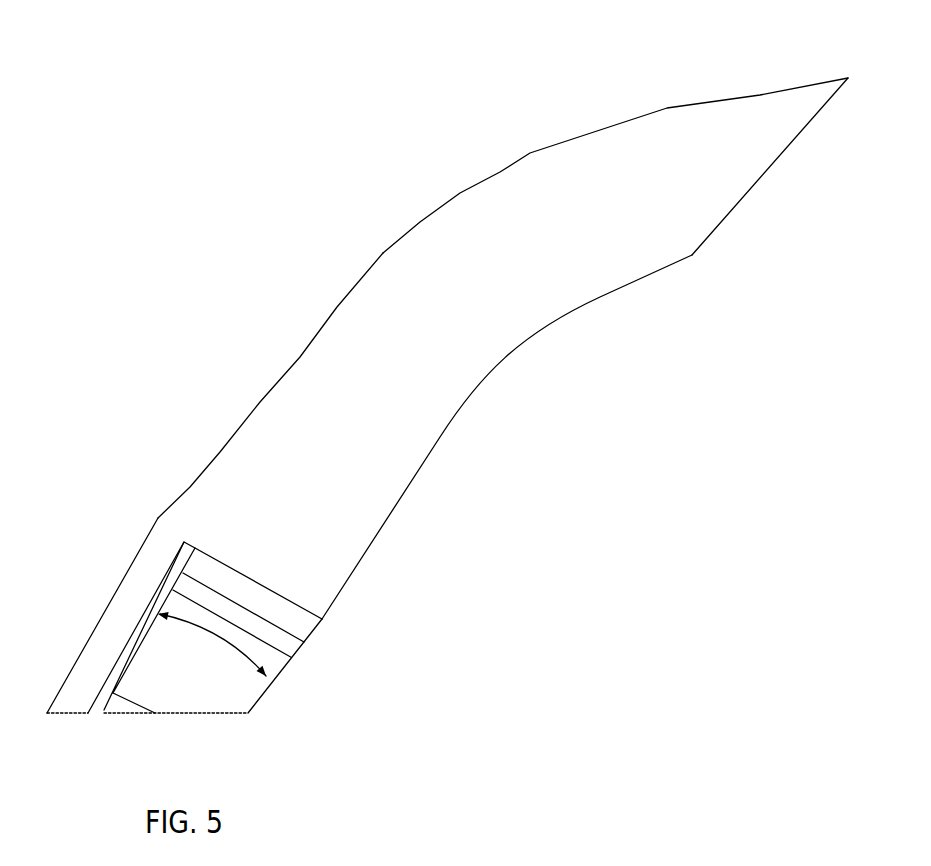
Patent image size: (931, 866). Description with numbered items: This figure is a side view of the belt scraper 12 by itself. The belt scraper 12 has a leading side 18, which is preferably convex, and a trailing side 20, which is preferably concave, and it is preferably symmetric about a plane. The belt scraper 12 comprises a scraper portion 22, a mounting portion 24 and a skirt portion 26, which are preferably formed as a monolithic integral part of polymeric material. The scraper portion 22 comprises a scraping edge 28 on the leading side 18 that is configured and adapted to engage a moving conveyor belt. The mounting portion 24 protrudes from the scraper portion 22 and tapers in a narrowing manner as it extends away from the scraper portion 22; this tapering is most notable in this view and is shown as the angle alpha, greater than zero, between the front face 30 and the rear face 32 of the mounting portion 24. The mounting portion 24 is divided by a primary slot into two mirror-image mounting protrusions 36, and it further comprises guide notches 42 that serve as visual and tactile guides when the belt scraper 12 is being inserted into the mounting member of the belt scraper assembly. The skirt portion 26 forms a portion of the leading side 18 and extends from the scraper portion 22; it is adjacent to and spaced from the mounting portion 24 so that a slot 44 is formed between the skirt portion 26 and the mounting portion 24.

The belt scraper 12 is at (285, 183).
The leading side 18 is at (460, 192).
The trailing side 20 is at (482, 382).
The scraper portion 22 is at (352, 320).
The mounting portion 24 is at (223, 698).
The skirt portion 26 is at (85, 664).
The scraping edge 28 is at (848, 73).
The front face 30 is at (138, 640).
The rear face 32 is at (265, 685).
The mounting protrusion 36 is at (156, 698).
The guide notch 42 is at (287, 643).
The slot 44 is at (160, 588).